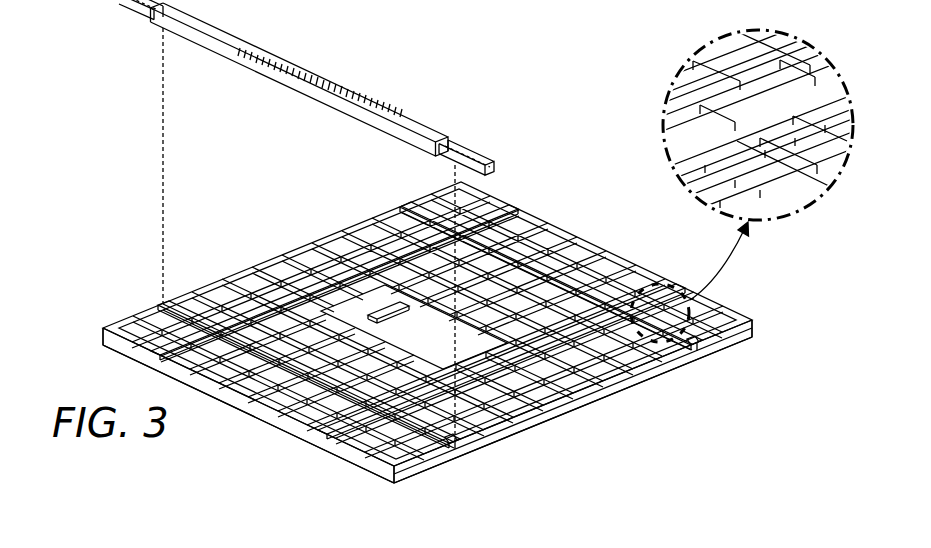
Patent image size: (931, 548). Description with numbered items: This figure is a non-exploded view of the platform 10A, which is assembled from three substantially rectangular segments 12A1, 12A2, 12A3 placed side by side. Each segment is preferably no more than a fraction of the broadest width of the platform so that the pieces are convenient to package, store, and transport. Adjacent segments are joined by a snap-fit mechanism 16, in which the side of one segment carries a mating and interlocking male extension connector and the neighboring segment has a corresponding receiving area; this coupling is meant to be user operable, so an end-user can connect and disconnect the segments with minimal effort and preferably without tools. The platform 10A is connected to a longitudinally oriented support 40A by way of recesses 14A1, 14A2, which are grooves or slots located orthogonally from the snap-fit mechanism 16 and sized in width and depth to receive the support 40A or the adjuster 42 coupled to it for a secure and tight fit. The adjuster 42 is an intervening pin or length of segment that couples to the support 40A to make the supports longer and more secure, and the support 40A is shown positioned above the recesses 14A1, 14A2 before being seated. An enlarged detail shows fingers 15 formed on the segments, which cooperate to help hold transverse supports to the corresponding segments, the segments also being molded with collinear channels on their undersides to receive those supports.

The platform 10A is at (116, 181).
The segment 12A1 is at (296, 438).
The segment 12A2 is at (602, 395).
The segment 12A3 is at (655, 380).
The recess 14A1 is at (405, 212).
The recess 14A2 is at (460, 437).
The fingers 15 is at (690, 82).
The snap-fit mechanism 16 is at (372, 250).
The support 40A is at (375, 100).
The adjuster 42 is at (150, 12).